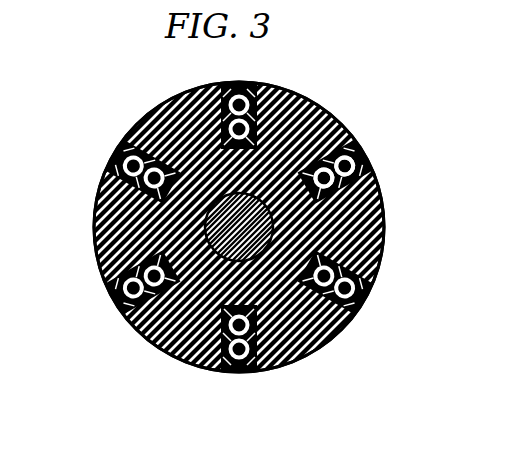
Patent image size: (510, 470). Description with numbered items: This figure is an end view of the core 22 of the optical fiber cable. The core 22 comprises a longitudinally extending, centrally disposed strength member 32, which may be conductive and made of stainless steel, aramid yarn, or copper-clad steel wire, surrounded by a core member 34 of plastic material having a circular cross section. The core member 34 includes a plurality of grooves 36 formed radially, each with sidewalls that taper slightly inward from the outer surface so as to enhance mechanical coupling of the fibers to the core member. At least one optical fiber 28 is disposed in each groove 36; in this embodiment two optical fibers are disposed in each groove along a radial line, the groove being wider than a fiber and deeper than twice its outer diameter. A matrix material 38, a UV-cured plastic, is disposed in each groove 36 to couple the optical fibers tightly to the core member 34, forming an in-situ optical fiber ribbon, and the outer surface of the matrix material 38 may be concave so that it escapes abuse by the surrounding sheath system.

The core 22 is at (338, 104).
The optical fiber 28 is at (360, 292).
The strength member 32 is at (215, 232).
The core member 34 is at (168, 330).
The groove 36 is at (372, 198).
The matrix material 38 is at (372, 182).